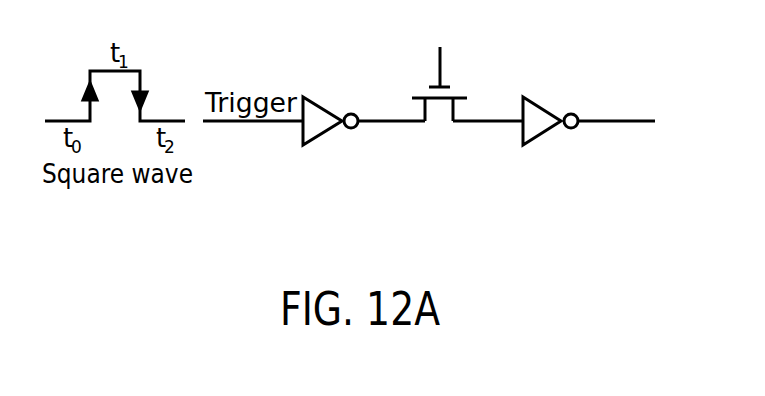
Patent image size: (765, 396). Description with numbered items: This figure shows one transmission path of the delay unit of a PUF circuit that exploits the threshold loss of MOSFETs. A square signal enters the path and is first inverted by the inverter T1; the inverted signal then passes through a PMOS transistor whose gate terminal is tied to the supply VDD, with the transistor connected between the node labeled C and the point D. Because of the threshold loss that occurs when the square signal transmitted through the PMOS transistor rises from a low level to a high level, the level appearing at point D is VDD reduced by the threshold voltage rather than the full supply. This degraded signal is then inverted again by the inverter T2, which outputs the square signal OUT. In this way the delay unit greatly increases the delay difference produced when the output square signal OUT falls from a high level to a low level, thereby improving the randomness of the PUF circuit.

The inverter T1 is at (330, 97).
The inverter T2 is at (550, 98).
The node C is at (391, 156).
The point D is at (488, 156).
The element VDD is at (440, 62).
The square signal OUT is at (616, 103).